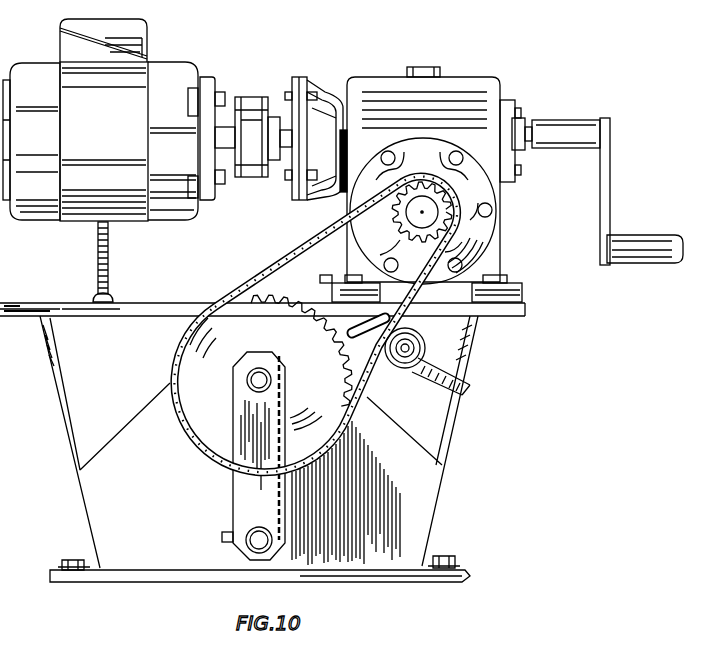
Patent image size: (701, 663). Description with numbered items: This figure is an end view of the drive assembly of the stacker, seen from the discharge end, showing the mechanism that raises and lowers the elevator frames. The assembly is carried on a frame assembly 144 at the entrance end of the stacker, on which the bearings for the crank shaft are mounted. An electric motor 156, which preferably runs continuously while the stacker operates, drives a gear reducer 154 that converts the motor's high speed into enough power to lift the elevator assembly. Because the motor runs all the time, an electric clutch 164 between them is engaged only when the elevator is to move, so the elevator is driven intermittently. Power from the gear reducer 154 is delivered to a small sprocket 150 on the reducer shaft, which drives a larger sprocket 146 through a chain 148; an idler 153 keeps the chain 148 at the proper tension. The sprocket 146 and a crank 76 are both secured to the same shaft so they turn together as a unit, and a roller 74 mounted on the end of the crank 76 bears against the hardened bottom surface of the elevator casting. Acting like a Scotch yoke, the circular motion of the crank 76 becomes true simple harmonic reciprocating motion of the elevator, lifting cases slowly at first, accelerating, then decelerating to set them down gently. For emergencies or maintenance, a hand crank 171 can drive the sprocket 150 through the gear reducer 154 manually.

The electric motor 156 is at (163, 88).
The electric clutch 164 is at (251, 92).
The gear reducer 154 is at (483, 80).
The crank 171 is at (612, 196).
The sprocket 150 is at (500, 240).
The chain 148 is at (256, 273).
The idler 153 is at (450, 348).
The sprocket 146 is at (178, 374).
The frame assembly 144 is at (425, 489).
The crank 76 is at (255, 498).
The roller 74 is at (250, 548).